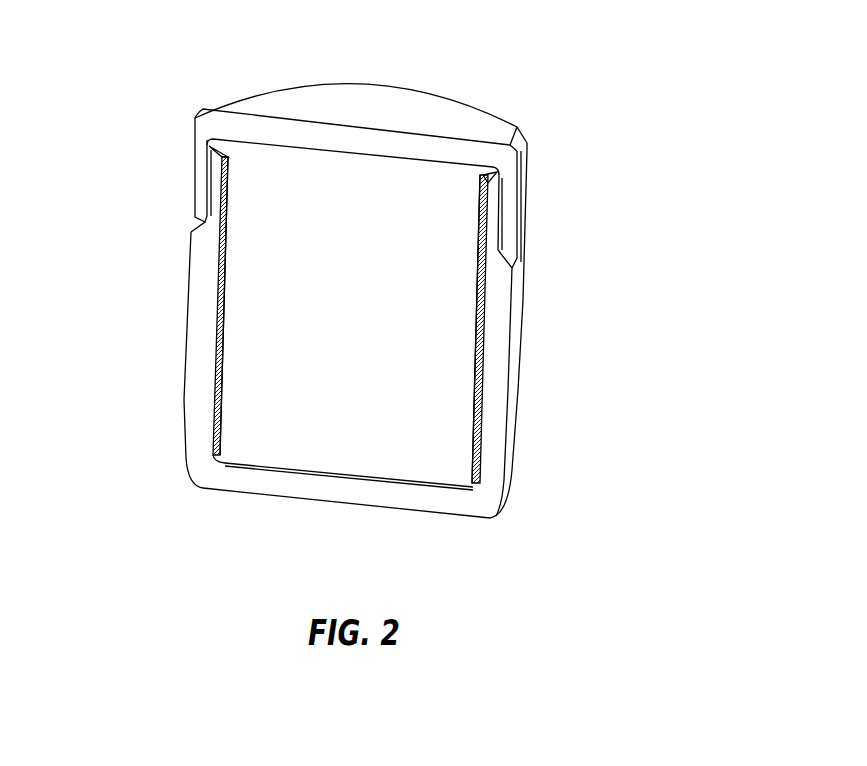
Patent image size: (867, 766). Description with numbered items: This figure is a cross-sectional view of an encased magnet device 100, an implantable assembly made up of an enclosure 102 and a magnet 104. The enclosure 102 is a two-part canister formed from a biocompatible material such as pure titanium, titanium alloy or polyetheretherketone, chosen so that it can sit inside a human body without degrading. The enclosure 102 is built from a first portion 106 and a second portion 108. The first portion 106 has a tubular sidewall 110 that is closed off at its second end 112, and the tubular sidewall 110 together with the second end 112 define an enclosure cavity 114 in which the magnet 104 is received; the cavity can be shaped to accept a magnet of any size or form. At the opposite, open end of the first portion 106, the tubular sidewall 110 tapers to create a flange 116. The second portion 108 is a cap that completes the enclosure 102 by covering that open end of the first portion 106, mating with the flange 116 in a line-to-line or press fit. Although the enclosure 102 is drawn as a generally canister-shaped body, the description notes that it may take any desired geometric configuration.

The encased magnet device 100 is at (486, 47).
The enclosure 102 is at (581, 301).
The magnet 104 is at (370, 308).
The first portion 106 is at (242, 100).
The second portion 108 is at (516, 405).
The tubular sidewall 110 is at (205, 297).
The second end 112 is at (270, 483).
The enclosure cavity 114 is at (458, 227).
The flange 116 is at (215, 190).